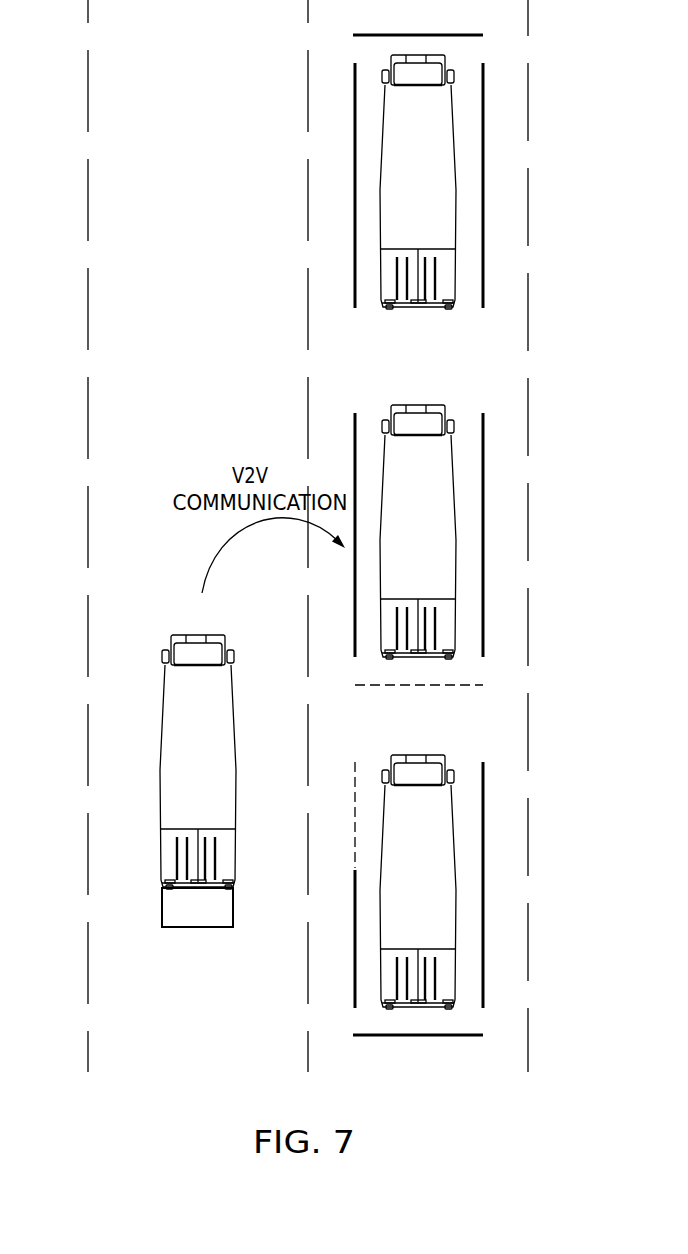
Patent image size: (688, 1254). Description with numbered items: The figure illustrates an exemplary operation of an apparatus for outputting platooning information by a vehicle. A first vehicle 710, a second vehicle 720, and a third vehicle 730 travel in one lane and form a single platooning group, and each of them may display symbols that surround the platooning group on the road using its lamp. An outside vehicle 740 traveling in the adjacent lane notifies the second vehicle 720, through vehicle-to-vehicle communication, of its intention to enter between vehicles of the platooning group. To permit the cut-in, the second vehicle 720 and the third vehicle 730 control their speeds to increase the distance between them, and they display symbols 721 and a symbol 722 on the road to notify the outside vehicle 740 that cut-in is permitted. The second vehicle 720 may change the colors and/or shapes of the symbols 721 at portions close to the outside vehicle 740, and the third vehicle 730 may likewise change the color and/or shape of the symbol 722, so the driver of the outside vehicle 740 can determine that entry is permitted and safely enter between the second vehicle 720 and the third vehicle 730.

The first vehicle 710 is at (437, 178).
The second vehicle 720 is at (437, 512).
The third vehicle 730 is at (437, 868).
The outside vehicle 740 is at (167, 800).
The symbols 721 is at (382, 685).
The symbol 722 is at (355, 798).